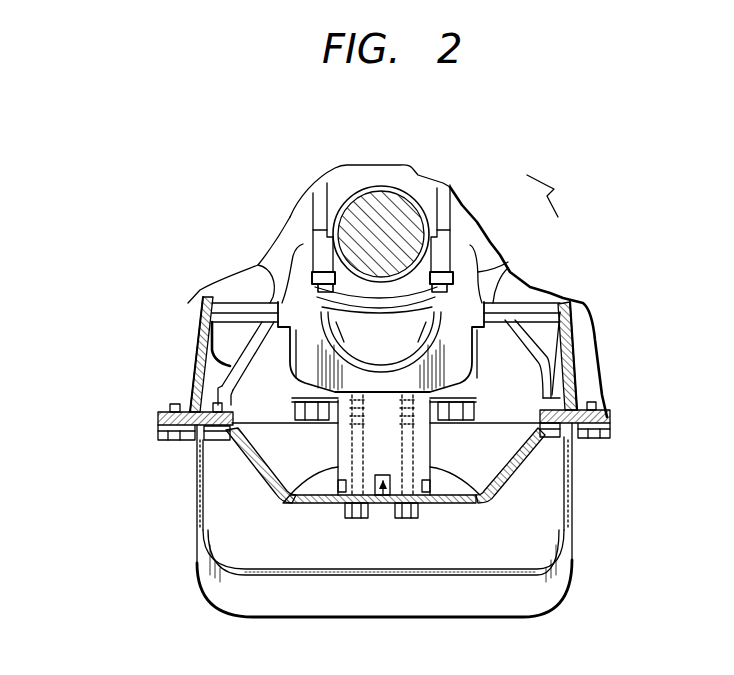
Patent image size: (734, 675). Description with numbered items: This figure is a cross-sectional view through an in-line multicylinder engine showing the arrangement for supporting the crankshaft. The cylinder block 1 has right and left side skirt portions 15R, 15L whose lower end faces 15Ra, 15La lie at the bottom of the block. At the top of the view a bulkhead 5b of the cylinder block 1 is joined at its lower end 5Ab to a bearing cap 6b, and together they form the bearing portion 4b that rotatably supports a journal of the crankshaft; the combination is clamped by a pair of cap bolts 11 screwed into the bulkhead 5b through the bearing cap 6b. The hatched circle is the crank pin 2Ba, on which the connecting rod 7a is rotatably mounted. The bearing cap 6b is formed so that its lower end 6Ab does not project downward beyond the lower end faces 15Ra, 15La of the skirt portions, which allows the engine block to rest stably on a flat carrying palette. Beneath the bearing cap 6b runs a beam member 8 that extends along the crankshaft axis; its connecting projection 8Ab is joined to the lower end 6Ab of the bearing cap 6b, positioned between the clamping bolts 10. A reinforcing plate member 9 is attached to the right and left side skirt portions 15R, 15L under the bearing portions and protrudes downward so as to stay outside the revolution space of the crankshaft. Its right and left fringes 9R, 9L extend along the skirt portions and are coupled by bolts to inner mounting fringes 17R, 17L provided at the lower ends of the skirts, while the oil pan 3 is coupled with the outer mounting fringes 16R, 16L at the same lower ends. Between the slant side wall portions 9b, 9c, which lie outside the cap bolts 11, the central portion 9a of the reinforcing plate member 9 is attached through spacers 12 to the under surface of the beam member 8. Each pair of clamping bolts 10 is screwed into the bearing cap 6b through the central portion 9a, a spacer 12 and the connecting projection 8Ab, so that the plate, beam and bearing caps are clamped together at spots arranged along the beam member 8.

The cylinder block 1 is at (583, 297).
The crank pin 2Ba is at (390, 210).
The oil pan 3 is at (575, 487).
The bearing portion 4b is at (553, 196).
The bulkhead 5b is at (464, 273).
The bearing cap 6b is at (457, 347).
The connecting rod 7a is at (430, 187).
The beam member 8 is at (381, 503).
The connecting projection 8Ab is at (476, 497).
The reinforcing plate member 9 is at (463, 506).
The central portion 9a is at (330, 503).
The slant side wall portion 9b is at (518, 447).
The slant side wall portion 9c is at (248, 442).
The left fringe 9L is at (195, 463).
The right fringe 9R is at (573, 527).
The clamping bolt 10 is at (350, 518).
The cap bolt 11 is at (307, 418).
The spacer 12 is at (313, 502).
The left side skirt portion 15L is at (188, 408).
The lower end face 15La is at (165, 417).
The right side skirt portion 15R is at (580, 393).
The lower end face 15Ra is at (612, 412).
The outer mounting fringe 16L is at (158, 428).
The outer mounting fringe 16R is at (612, 426).
The inner mounting fringe 17L is at (172, 407).
The inner mounting fringe 17R is at (590, 406).
The lower end of bulkhead 5Ab is at (205, 302).
The lower end of bearing cap 6Ab is at (340, 425).